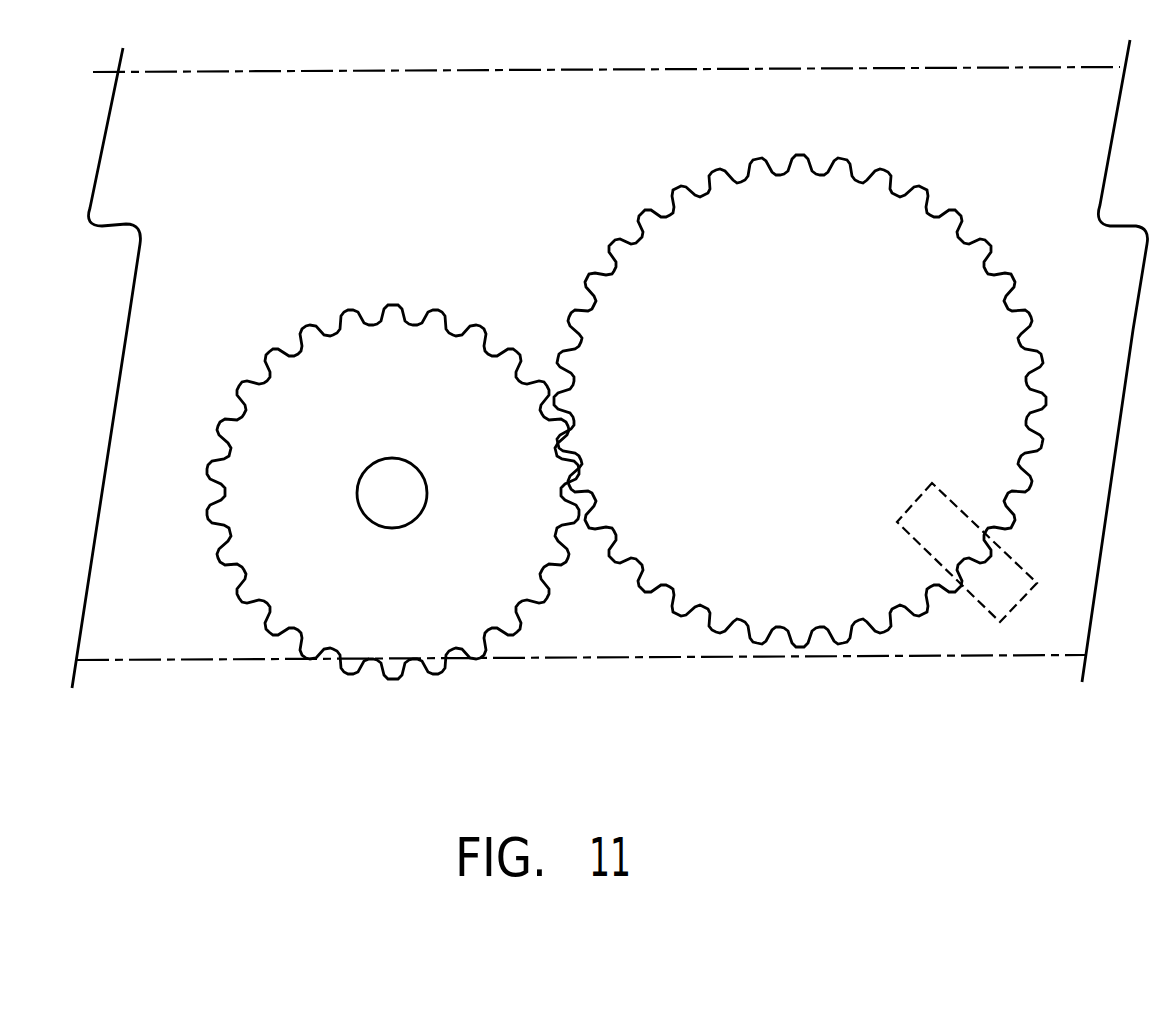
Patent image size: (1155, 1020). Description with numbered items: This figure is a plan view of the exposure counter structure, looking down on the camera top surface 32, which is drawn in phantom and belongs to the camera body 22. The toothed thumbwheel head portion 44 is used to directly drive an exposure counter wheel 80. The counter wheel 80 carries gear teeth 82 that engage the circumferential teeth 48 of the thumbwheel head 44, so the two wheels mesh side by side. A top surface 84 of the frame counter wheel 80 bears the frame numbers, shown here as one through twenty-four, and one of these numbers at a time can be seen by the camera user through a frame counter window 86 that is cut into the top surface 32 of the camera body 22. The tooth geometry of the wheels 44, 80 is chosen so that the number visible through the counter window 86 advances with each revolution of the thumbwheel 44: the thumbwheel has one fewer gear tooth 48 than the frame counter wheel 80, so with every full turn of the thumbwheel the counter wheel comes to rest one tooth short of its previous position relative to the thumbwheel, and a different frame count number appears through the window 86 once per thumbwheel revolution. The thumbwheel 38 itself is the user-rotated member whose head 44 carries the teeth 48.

The camera top surface 32 is at (186, 135).
The camera body 22 is at (208, 660).
The drive gear 38 is at (382, 440).
The circumferential teeth 48 is at (382, 465).
The thumbwheel head portion 44 is at (262, 425).
The exposure counter wheel 80 is at (805, 365).
The gear teeth 82 is at (805, 401).
The top surface 84 is at (590, 357).
The frame counter window 86 is at (923, 490).